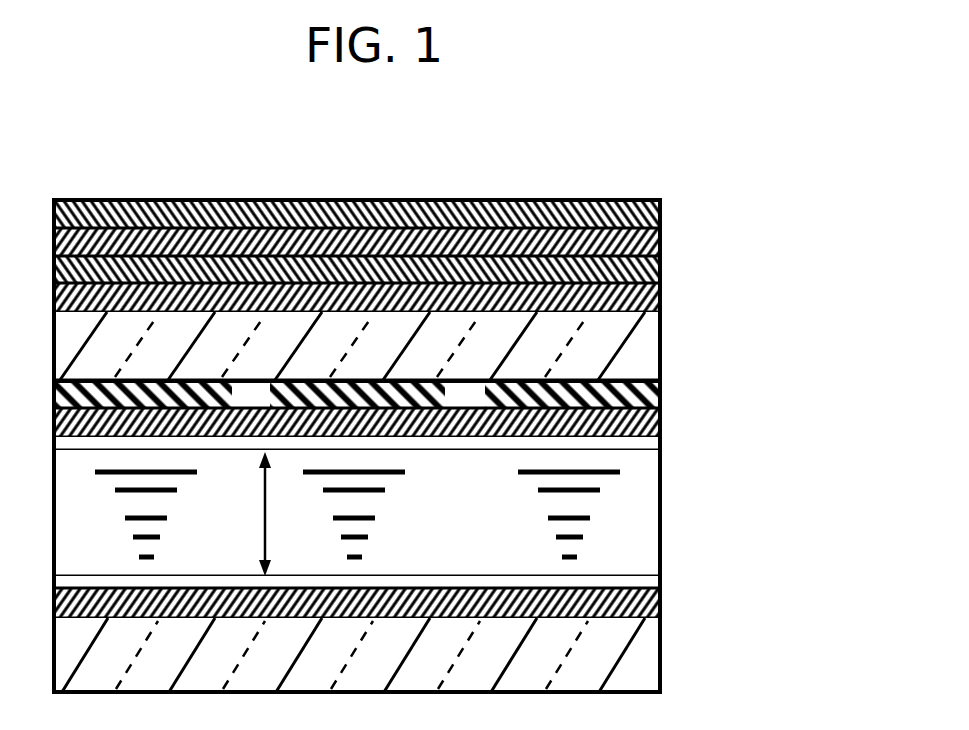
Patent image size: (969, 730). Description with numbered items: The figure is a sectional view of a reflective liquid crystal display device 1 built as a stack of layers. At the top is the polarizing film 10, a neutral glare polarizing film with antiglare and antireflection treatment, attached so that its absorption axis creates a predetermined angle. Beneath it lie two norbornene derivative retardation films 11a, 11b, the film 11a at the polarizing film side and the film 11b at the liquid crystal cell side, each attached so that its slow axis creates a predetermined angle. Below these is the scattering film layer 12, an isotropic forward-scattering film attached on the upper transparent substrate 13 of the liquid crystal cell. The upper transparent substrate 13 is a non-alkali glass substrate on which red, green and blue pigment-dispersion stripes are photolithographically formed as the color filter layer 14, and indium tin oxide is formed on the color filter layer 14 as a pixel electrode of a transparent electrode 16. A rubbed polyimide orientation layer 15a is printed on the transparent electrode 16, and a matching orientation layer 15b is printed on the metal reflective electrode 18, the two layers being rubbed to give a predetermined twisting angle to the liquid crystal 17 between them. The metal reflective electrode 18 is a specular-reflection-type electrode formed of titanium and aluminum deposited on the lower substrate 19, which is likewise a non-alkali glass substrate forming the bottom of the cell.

The liquid crystal display element 1 is at (802, 320).
The polarizing film 10 is at (661, 210).
The norbornene derivative retardation film 11a is at (661, 236).
The norbornene derivative retardation film 11b is at (661, 263).
The scattering film layer 12 is at (661, 294).
The upper transparent substrate 13 is at (640, 348).
The color filter layer 14 is at (653, 392).
The transparent electrode 16 is at (650, 423).
The orientation layer 15a is at (642, 440).
The liquid crystal layer 17 is at (640, 516).
The orientation layer 15b is at (647, 582).
The metal reflective electrode 18 is at (645, 603).
The lower substrate 19 is at (640, 656).